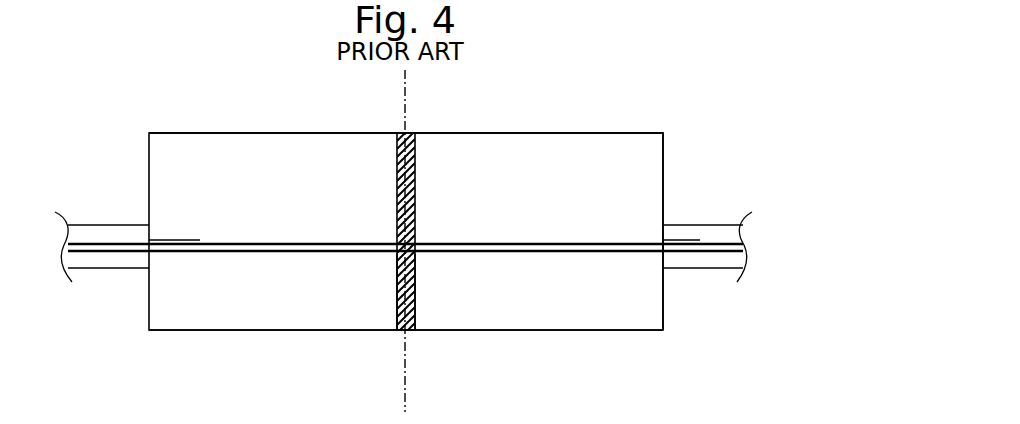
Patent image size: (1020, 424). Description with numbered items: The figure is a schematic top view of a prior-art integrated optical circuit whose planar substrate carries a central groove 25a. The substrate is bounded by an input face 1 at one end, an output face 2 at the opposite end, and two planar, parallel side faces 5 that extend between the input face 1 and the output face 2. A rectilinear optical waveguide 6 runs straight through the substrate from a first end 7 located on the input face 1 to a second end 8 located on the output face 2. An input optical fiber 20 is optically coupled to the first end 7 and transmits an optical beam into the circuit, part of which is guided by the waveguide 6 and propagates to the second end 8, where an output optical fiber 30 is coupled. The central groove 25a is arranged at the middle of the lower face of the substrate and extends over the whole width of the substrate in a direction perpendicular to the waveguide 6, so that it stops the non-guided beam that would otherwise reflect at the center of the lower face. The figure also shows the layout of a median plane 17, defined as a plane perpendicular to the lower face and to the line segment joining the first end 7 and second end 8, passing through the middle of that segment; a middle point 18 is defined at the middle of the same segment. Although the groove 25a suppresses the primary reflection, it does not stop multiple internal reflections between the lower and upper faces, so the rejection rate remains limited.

The input face 1 is at (150, 322).
The output face 2 is at (667, 143).
The side faces 5 is at (242, 133).
The optical waveguide 6 is at (548, 243).
The first end 7 is at (153, 243).
The second end 8 is at (662, 247).
The median plane 17 is at (408, 358).
The middle point 18 is at (397, 254).
The input optical fiber 20 is at (108, 257).
The central groove 25a is at (417, 162).
The output optical fiber 30 is at (723, 255).